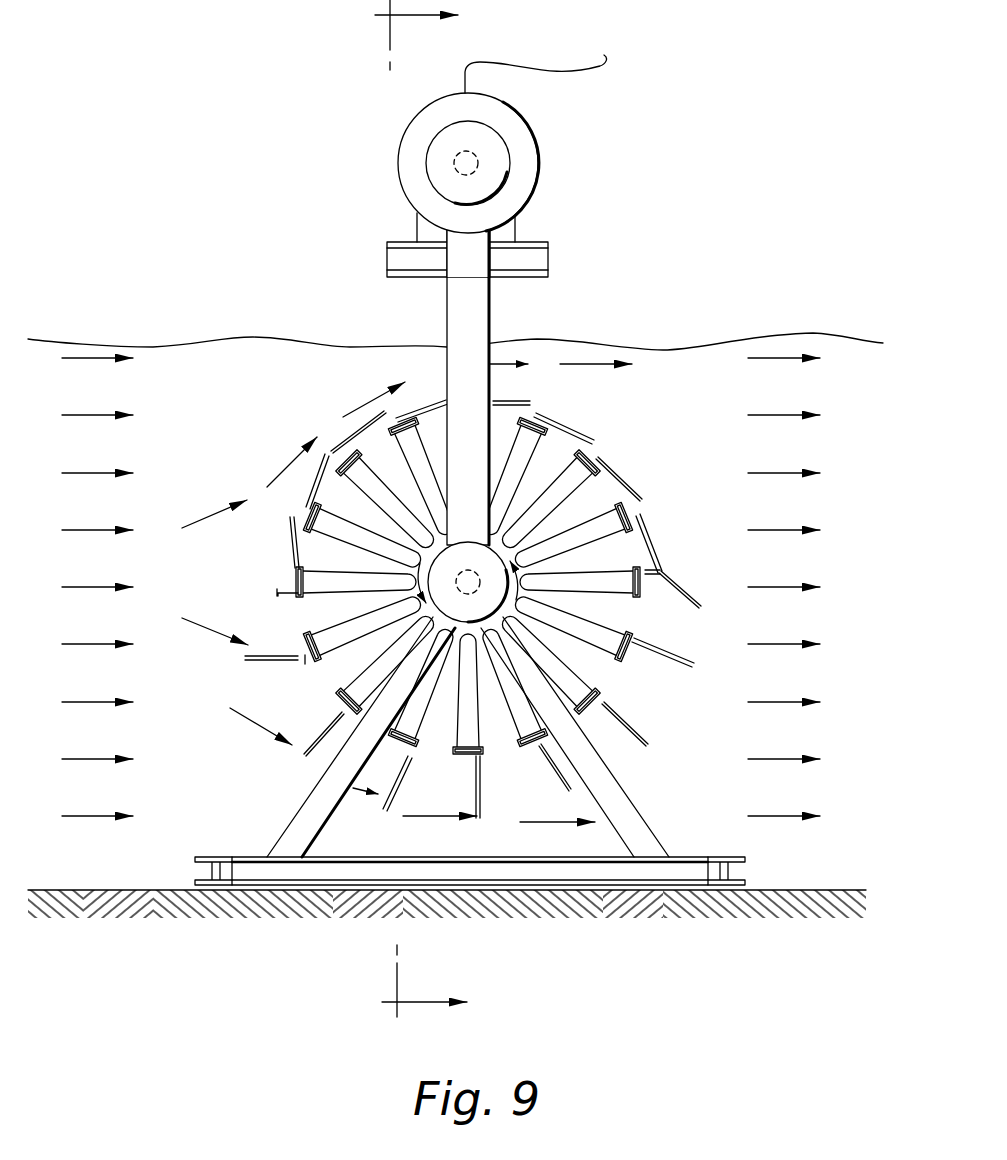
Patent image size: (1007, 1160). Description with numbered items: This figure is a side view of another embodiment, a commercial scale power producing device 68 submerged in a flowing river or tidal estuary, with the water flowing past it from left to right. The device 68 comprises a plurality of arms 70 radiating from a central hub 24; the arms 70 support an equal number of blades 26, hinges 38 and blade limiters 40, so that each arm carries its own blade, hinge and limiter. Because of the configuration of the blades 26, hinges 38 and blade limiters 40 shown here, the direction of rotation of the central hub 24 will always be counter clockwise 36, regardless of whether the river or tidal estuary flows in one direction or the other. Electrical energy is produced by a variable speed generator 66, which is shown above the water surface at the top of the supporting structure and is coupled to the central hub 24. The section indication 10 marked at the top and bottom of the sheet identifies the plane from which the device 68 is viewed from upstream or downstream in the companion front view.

The section line 10- 10 is at (447, 510).
The central hub 24 is at (467, 531).
The blade 26 is at (625, 718).
The counter clockwise direction of rotation 36 is at (352, 553).
The hinge 38 is at (660, 572).
The blade limiter 40 is at (310, 664).
The variable speed generator 66 is at (403, 140).
The commercial scale power producing device 68 is at (447, 330).
The arm 70 is at (561, 468).